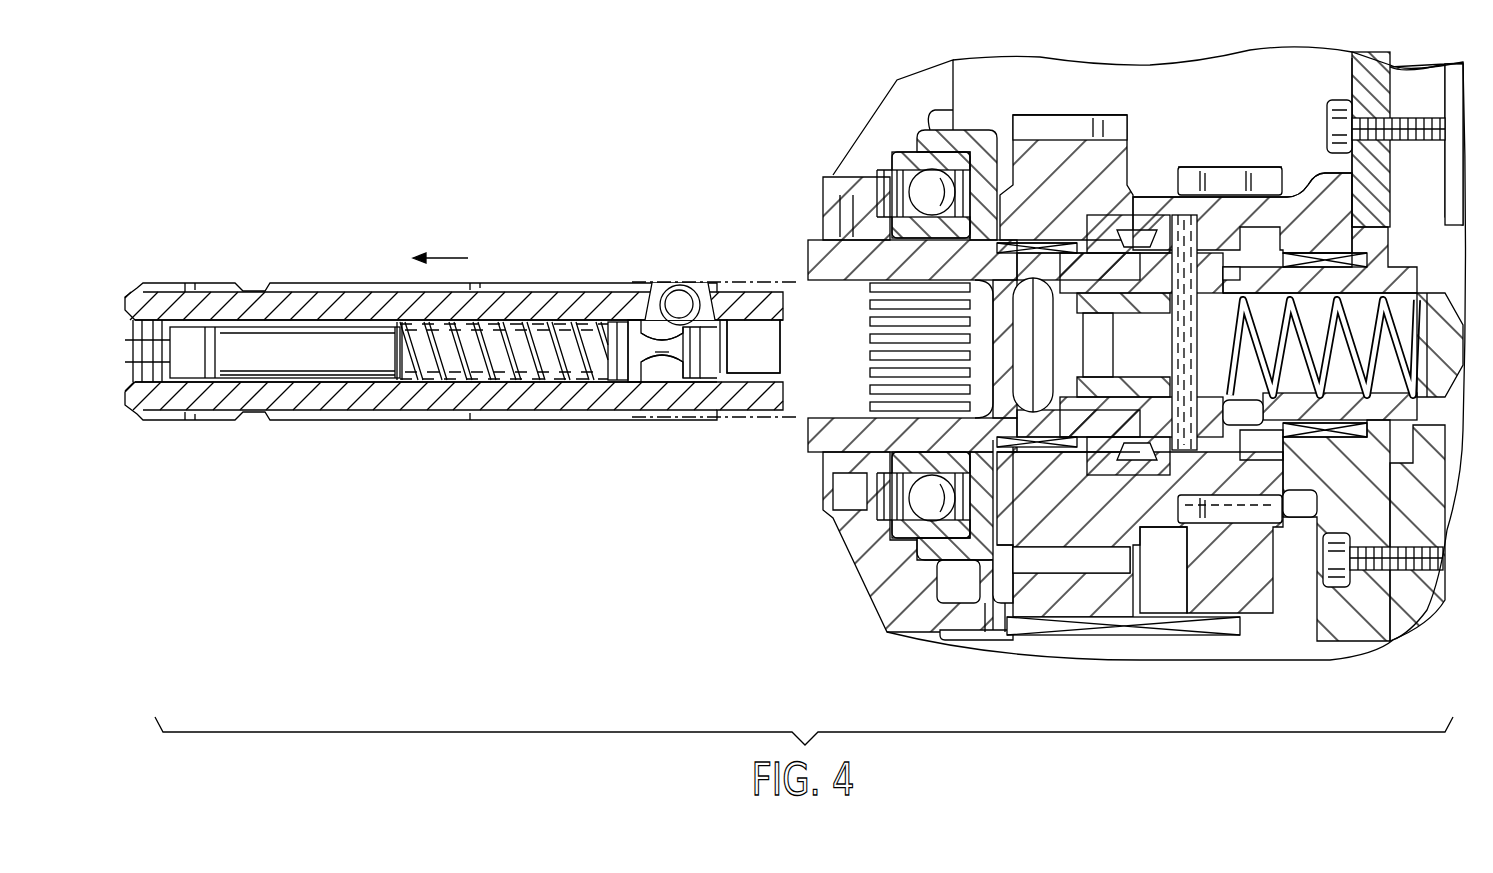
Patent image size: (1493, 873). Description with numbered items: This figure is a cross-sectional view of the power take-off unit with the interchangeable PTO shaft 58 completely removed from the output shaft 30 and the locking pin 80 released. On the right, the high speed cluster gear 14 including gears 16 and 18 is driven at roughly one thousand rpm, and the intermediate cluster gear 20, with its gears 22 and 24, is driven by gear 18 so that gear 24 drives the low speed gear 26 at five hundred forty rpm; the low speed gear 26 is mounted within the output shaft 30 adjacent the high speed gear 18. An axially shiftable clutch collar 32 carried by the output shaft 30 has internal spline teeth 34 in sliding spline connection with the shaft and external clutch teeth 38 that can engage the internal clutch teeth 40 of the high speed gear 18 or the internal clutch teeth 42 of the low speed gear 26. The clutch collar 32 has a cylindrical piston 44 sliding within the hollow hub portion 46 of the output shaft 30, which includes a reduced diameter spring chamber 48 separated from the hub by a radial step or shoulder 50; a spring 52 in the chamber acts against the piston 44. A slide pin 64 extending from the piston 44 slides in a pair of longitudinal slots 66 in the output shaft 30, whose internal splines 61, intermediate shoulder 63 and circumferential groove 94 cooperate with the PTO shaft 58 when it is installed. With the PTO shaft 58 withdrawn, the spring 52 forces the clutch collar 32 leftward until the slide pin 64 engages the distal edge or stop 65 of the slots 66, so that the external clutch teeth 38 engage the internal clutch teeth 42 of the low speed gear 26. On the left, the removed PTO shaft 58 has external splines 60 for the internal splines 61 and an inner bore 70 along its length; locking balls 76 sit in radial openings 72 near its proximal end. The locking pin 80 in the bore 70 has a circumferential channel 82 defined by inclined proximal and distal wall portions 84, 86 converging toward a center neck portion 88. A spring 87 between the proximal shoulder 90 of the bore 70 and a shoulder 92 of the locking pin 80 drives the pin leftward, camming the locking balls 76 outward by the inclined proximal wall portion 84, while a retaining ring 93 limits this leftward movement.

The high speed cluster gear 14 is at (1298, 195).
The gear 16 is at (1352, 75).
The high speed gear 18 is at (1212, 167).
The intermediate cluster gear 20 is at (1278, 575).
The gear 22 is at (1240, 533).
The gear 24 is at (1060, 577).
The low speed gear 26 is at (1073, 115).
The output shaft 30 is at (805, 437).
The clutch collar 32 is at (1207, 245).
The internal spline teeth 34 is at (1068, 475).
The external clutch teeth 38 is at (1137, 470).
The internal clutch teeth 40 is at (1253, 467).
The internal clutch teeth 42 is at (1043, 513).
The cylindrical piston 44 is at (1227, 290).
The hollow hub portion 46 is at (1077, 253).
The spring chamber 48 is at (1450, 387).
The radial step or shoulder 50 is at (1363, 253).
The spring 52 is at (1383, 323).
The PTO shaft 58 is at (387, 427).
The external splines 60 is at (540, 422).
The internal splines 61 is at (872, 347).
The intermediate shoulder 63 is at (1070, 403).
The slide pin 64 is at (1177, 343).
The distal edge or stop 65 is at (1120, 407).
The longitudinal slots 66 is at (1387, 493).
The inner bore 70 is at (287, 327).
The radial openings 72 is at (722, 308).
The locking ball 76 is at (681, 284).
The locking pin 80 is at (323, 384).
The circumferential channel 82 is at (650, 337).
The inclined proximal wall portion 84 is at (667, 372).
The inclined distal wall portion 86 is at (640, 366).
The spring 87 is at (537, 337).
The center neck portion 88 is at (652, 364).
The proximal shoulder 90 is at (613, 325).
The shoulder 92 is at (405, 358).
The retaining ring 93 is at (732, 372).
The circumferential groove 94 is at (1040, 283).